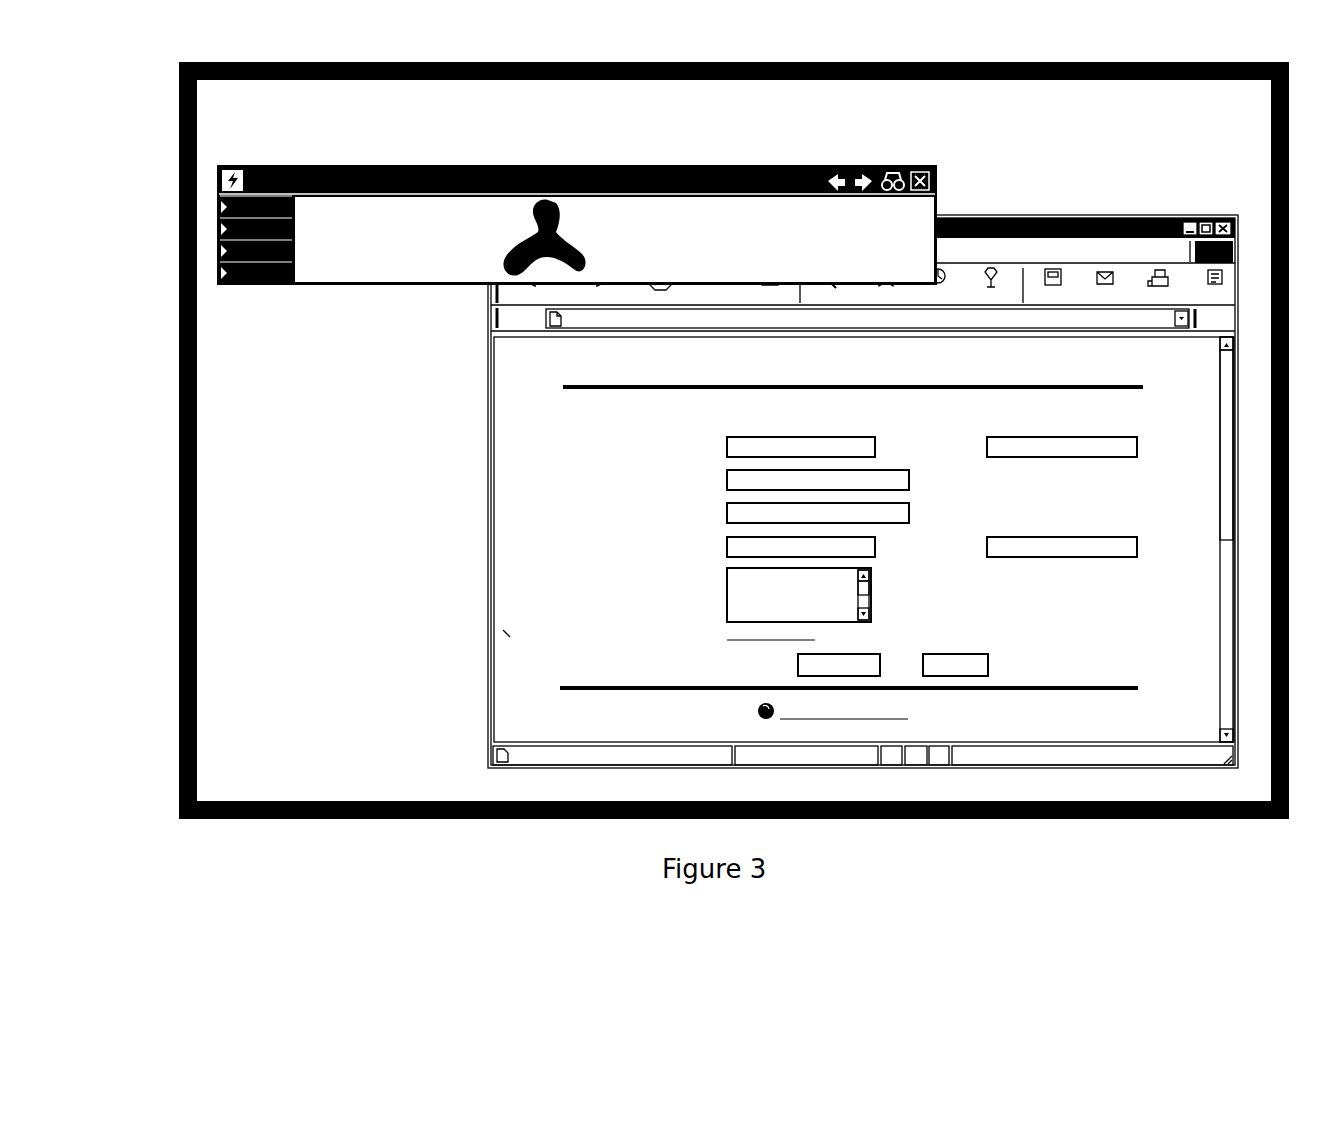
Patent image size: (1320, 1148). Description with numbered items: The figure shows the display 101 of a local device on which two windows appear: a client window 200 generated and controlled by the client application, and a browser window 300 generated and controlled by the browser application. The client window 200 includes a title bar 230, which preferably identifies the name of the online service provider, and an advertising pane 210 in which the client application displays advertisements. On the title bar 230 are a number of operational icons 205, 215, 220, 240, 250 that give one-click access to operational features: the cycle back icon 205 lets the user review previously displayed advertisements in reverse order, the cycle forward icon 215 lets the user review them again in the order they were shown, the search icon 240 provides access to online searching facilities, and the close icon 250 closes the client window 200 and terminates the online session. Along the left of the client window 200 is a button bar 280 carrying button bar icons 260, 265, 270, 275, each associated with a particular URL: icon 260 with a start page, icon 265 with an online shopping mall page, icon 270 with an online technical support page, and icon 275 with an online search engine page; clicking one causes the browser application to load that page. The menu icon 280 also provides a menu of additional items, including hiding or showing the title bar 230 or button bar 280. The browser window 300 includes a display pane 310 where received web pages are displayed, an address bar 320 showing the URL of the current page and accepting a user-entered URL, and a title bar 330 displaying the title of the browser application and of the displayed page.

The display 101 is at (313, 820).
The client window 200 is at (573, 249).
The cycle back icon 205 is at (835, 165).
The advertising pane 210 is at (485, 262).
The cycle forward icon 215 is at (862, 165).
The operational icon 220 is at (216, 181).
The title bar 230 is at (573, 141).
The search icon 240 is at (893, 165).
The close icon 250 is at (925, 165).
The button bar icon 260 is at (216, 206).
The button bar icon 265 is at (216, 231).
The button bar icon 270 is at (216, 251).
The button bar icon 275 is at (245, 285).
The button bar 280 is at (206, 293).
The browser window 300 is at (790, 466).
The display pane 310 is at (490, 618).
The address bar 320 is at (548, 331).
The title bar 330 is at (992, 215).